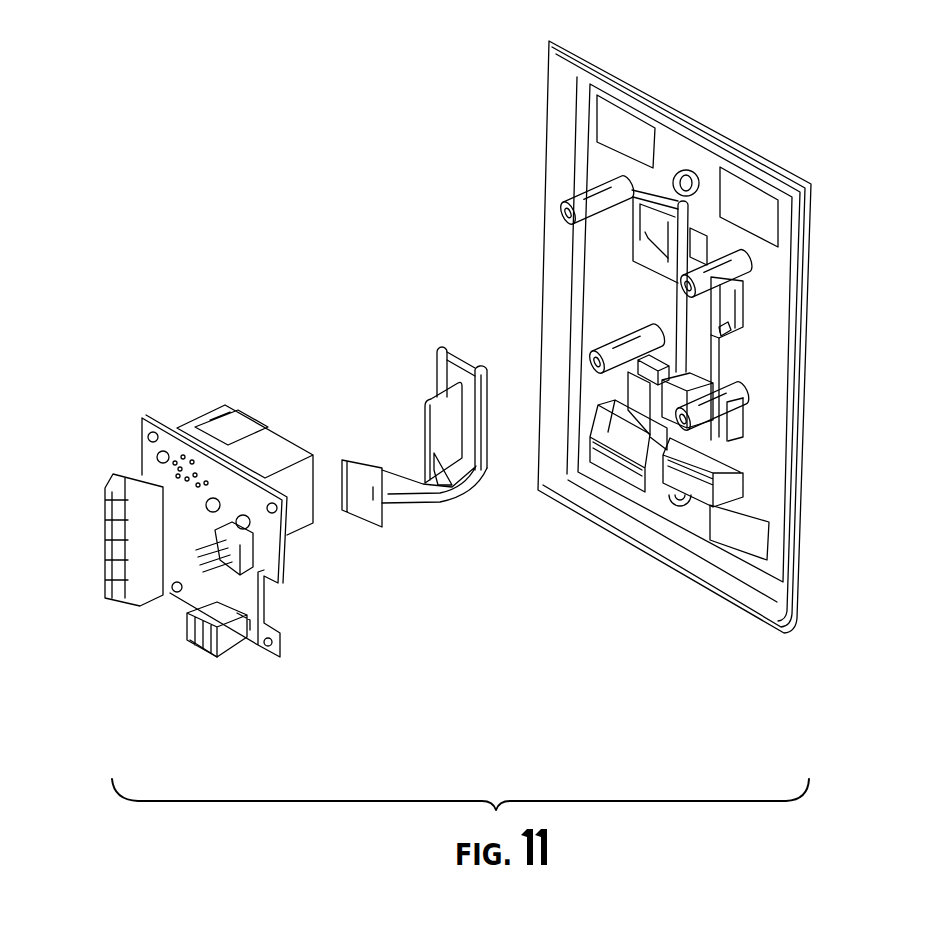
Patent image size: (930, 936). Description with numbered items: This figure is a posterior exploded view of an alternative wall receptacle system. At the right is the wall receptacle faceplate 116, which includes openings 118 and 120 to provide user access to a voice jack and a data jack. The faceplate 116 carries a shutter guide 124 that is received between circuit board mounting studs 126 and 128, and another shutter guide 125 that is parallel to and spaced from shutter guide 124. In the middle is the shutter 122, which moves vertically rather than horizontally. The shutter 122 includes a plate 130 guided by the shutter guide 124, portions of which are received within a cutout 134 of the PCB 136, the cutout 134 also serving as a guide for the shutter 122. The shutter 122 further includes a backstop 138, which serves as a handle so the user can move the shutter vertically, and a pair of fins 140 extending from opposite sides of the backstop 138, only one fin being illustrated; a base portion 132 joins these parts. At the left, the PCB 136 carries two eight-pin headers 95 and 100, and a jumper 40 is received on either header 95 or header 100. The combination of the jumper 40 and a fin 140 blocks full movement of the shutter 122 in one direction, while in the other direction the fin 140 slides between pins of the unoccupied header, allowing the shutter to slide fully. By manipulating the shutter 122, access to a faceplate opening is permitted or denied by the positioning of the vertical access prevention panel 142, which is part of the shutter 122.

The jumper 40 is at (197, 614).
The wall terminal header 95 is at (240, 643).
The wall terminal header 100 is at (237, 537).
The wall receptacle faceplate 116 is at (548, 99).
The opening 118 is at (703, 246).
The opening 120 is at (646, 233).
The shutter 122 is at (473, 461).
The shutter guide 124 is at (727, 334).
The shutter guide 125 is at (690, 323).
The circuit board mounting stud 126 is at (744, 270).
The circuit board mounting stud 128 is at (703, 415).
The plate 130 is at (424, 428).
The clip base 132 is at (414, 505).
The cutout 134 is at (283, 602).
The PCB 136 is at (143, 462).
The backstop 138 is at (358, 526).
The fin 140 is at (386, 471).
The vertical access prevention panel 142 is at (439, 358).